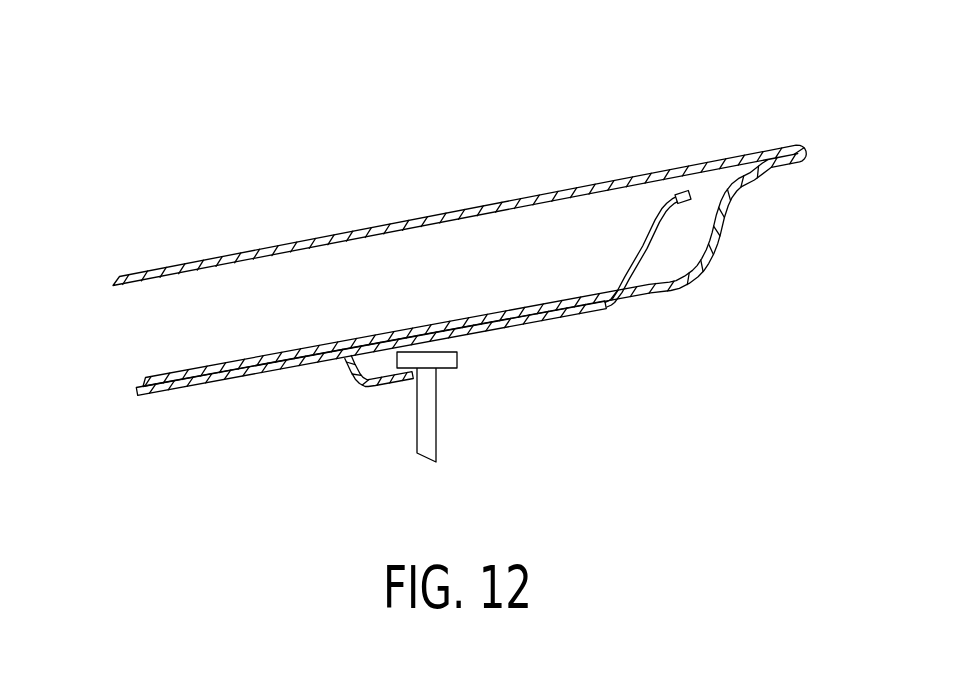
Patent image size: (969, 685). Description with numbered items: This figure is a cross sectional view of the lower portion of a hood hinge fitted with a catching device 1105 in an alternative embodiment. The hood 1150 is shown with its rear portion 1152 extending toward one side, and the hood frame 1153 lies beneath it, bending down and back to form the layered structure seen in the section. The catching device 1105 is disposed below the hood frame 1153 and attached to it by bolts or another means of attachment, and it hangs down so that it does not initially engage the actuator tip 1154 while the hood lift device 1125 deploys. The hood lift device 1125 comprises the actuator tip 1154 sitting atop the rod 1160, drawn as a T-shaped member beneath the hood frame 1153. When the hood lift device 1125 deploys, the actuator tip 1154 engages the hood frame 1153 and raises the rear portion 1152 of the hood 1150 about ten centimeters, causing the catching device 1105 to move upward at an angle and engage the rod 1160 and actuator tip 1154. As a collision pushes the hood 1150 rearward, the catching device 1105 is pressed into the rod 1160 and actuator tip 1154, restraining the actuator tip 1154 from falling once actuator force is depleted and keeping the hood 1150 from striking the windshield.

The hood 1150 is at (465, 205).
The rear portion 1152 is at (761, 152).
The hood frame 1153 is at (707, 268).
The actuator tip 1154 is at (457, 358).
The rod 1160 is at (436, 436).
The catching device 1105 is at (370, 386).
The hood lift device 1125 is at (492, 436).